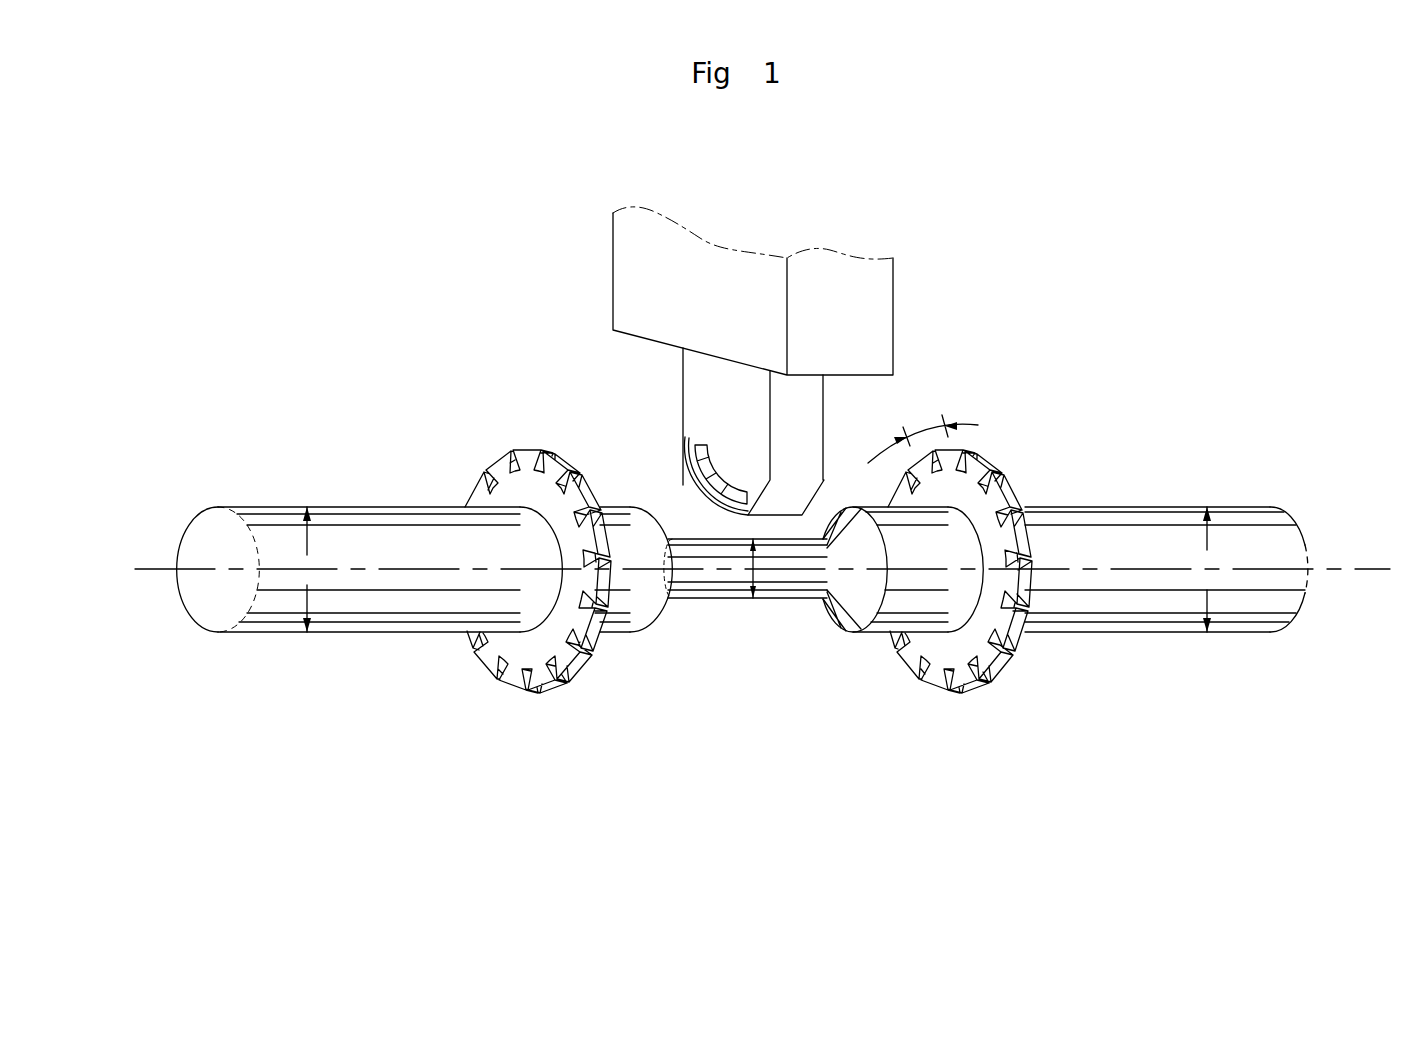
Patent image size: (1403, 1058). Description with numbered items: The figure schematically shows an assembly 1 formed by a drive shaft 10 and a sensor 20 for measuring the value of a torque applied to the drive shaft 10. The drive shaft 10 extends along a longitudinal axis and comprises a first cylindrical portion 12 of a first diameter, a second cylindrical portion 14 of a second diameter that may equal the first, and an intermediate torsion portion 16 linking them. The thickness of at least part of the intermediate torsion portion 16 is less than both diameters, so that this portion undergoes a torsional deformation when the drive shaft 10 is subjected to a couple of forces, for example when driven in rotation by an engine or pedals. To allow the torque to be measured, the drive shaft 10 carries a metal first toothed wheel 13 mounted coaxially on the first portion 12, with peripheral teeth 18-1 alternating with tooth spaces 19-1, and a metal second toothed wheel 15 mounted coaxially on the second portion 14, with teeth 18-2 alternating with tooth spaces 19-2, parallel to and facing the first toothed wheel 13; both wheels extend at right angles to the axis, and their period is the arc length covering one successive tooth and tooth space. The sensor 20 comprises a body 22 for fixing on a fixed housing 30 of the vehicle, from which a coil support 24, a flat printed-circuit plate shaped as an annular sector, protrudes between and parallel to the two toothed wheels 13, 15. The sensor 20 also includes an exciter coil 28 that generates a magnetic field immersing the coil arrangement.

The assembly 1 is at (380, 205).
The drive shaft 10 is at (318, 503).
The first cylindrical portion 12 is at (372, 605).
The first toothed wheel 13 is at (527, 493).
The second cylindrical portion 14 is at (1067, 615).
The second toothed wheel 15 is at (968, 658).
The intermediate torsion portion 16 is at (703, 590).
The teeth 18-1 is at (567, 663).
The teeth 18-2 is at (972, 463).
The tooth spaces 19-1 is at (508, 468).
The tooth spaces 19-2 is at (940, 667).
The sensor 20 is at (678, 381).
The body 22 is at (800, 408).
The coil support 24 is at (683, 450).
The exciter coil 28 is at (683, 502).
The fixed housing 30 is at (850, 297).